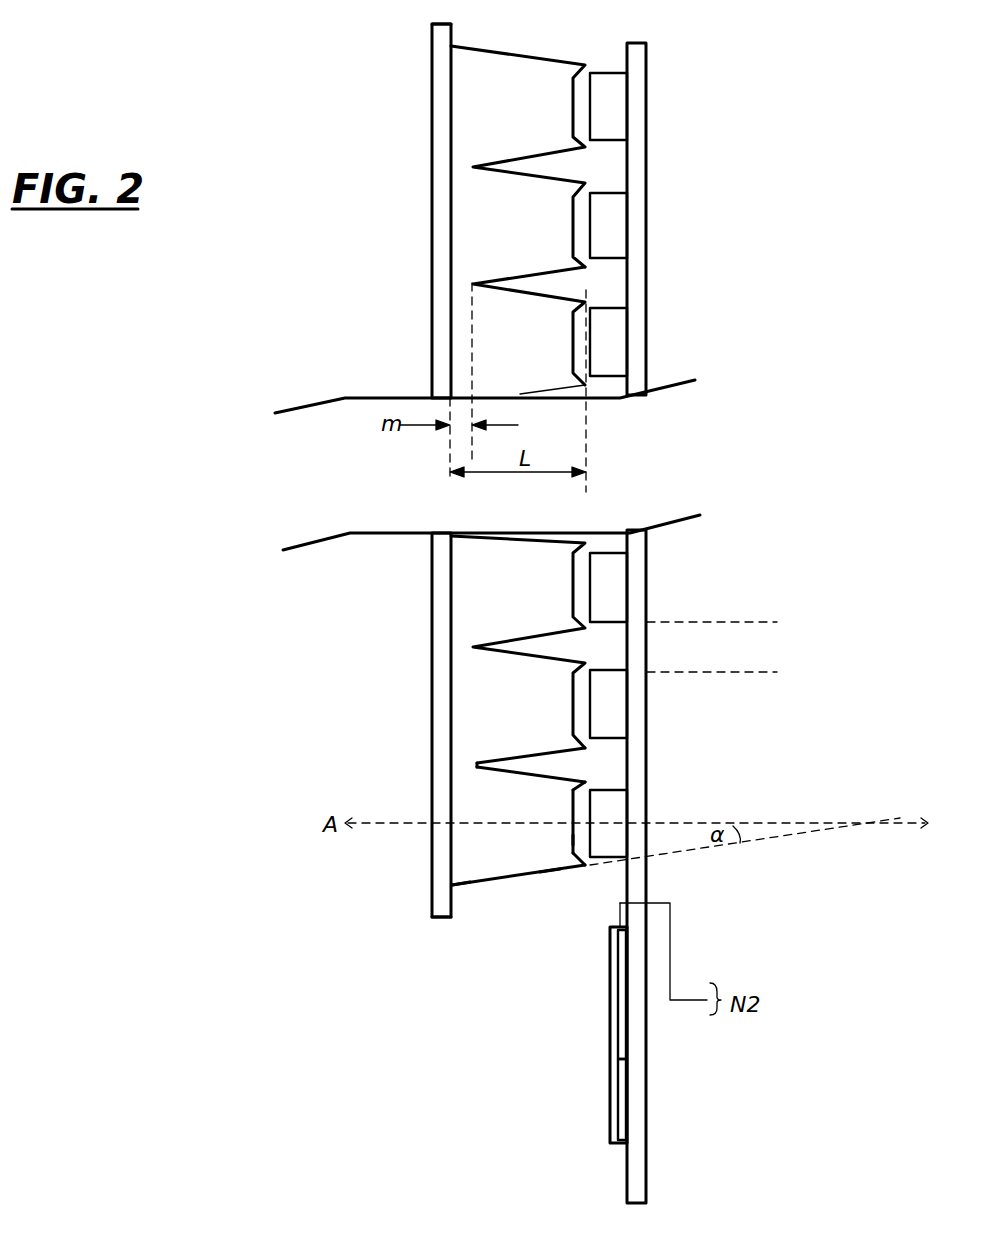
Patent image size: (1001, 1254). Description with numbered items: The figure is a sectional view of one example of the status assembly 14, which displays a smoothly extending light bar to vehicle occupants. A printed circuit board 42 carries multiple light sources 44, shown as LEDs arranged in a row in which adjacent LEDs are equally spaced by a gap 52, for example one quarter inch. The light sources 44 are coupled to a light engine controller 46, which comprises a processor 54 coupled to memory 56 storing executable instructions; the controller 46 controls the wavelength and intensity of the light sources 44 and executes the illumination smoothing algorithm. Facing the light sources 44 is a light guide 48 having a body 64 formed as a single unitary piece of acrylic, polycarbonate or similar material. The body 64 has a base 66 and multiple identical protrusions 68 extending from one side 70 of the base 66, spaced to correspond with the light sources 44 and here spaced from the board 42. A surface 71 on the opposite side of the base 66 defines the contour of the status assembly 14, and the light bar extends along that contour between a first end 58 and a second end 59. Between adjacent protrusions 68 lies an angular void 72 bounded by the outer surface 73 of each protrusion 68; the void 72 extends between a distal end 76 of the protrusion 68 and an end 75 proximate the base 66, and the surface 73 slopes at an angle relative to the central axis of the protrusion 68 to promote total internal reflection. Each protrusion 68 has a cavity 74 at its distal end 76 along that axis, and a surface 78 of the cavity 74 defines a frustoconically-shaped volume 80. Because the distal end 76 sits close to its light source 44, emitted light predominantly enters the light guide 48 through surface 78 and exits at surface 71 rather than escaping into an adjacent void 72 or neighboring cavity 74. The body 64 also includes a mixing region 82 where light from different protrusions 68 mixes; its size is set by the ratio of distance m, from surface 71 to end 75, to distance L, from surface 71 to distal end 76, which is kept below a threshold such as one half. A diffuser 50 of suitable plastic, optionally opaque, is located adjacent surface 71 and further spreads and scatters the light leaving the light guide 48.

The status assembly 14 is at (218, 252).
The printed circuit board 42 is at (660, 80).
The light sources 44 is at (608, 340).
The light engine controller 46 is at (552, 1035).
The light guide 48 is at (523, 46).
The diffuser 50 is at (425, 59).
The gap 52 is at (723, 622).
The processor 54 is at (610, 1018).
The memory 56 is at (610, 1093).
The first end 58 is at (432, 24).
The second end 59 is at (432, 916).
The body 64 is at (481, 838).
The base 66 is at (455, 887).
The protrusions 68 is at (549, 884).
The side 70 is at (478, 885).
The surface 71 is at (452, 709).
The void 72 is at (552, 768).
The outer surface 73 is at (556, 777).
The cavity 74 is at (580, 840).
The end 75 is at (473, 768).
The distal end 76 is at (574, 850).
The surface of cavity 78 is at (574, 828).
The frustoconically-shaped volume 80 is at (573, 805).
The mixing region 82 is at (470, 280).